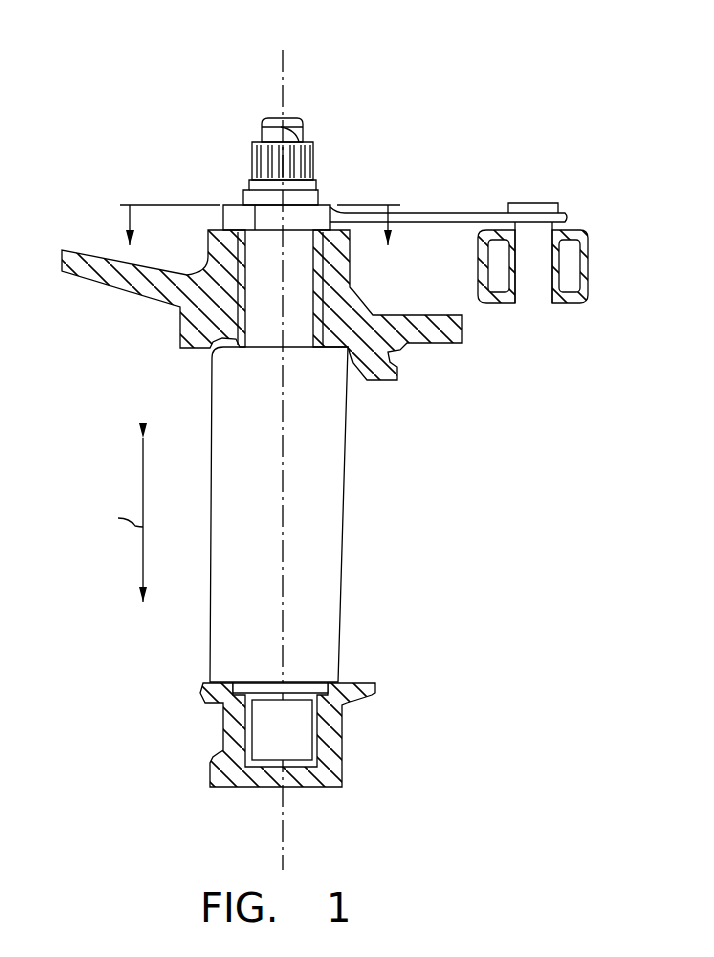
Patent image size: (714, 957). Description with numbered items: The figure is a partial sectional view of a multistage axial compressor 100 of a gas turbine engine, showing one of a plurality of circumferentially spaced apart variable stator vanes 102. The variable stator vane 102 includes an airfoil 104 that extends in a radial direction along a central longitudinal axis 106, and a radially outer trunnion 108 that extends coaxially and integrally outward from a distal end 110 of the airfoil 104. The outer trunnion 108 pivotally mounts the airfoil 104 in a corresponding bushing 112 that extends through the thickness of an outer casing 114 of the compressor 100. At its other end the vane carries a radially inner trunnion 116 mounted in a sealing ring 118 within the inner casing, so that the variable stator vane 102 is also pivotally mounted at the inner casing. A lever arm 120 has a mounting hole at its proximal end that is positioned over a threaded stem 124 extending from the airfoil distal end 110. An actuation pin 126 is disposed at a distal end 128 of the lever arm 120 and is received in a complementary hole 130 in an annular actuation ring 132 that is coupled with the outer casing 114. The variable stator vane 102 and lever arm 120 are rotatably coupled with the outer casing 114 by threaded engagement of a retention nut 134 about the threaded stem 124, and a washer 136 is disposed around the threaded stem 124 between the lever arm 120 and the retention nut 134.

The multistage axial compressor 100 is at (479, 72).
The variable stator vane 102 is at (357, 486).
The airfoil 104 is at (337, 506).
The central longitudinal axis 106 is at (290, 78).
The radially outer trunnion 108 is at (262, 310).
The distal end 110 is at (258, 350).
The bushing 112 is at (250, 274).
The outer casing 114 is at (74, 248).
The radially inner trunnion 116 is at (265, 737).
The sealing ring 118 is at (290, 735).
The lever arm 120 is at (483, 186).
The threaded stem 124 is at (268, 120).
The actuation pin 126 is at (568, 289).
The distal end 128 is at (570, 213).
The complementary hole 130 is at (527, 268).
The annular actuation ring 132 is at (590, 256).
The retention nut 134 is at (318, 172).
The washer 136 is at (243, 197).